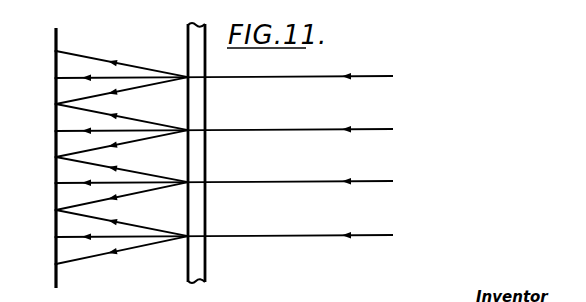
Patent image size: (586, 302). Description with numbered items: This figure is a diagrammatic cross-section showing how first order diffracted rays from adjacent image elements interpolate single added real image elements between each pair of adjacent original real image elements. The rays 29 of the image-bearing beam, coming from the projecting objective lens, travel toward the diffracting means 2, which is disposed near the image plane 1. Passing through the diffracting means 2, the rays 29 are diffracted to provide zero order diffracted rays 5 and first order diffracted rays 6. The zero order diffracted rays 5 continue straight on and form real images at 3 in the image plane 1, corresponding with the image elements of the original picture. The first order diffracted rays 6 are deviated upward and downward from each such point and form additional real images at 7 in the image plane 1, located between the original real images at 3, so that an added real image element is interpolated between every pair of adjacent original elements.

The image plane 1 is at (55, 31).
The diffracting means 2 is at (188, 27).
The real images 3 is at (46, 159).
The zero order diffracted rays 5 is at (130, 148).
The first order diffracted rays 6 is at (122, 151).
The additional real images 7 is at (47, 158).
The rays of the image-bearing beam 29 is at (268, 78).